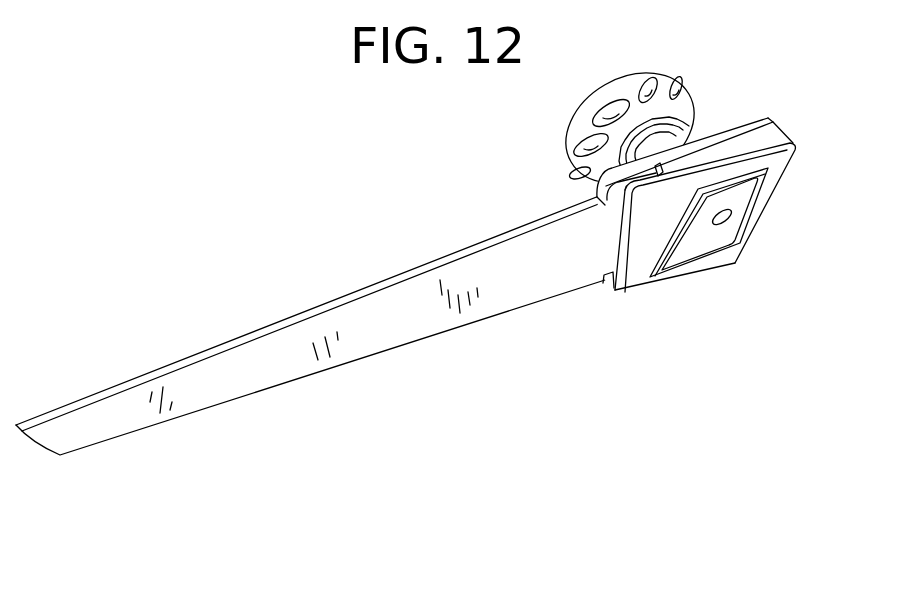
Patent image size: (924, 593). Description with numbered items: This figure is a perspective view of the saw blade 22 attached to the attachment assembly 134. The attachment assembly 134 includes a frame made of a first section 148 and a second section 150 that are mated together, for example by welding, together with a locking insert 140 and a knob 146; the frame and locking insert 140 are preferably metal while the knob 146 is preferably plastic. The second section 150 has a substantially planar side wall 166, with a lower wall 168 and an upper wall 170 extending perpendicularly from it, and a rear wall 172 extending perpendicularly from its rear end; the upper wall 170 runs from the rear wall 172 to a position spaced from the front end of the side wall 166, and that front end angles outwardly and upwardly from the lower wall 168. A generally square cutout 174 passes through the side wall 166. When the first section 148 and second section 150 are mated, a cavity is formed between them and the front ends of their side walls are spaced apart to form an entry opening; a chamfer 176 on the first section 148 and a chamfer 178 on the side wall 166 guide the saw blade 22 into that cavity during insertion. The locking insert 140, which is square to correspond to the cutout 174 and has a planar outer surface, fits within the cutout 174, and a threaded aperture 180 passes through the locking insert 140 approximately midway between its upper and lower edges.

The saw blade 22 is at (400, 331).
The knob 146 is at (596, 106).
The first section 148 is at (740, 127).
The second section 150 is at (796, 152).
The upper wall 170 is at (773, 128).
The chamfer 176 is at (580, 191).
The side wall 166 is at (637, 237).
The chamfer 178 is at (603, 247).
The lower wall 168 is at (677, 277).
The rear wall 172 is at (763, 202).
The locking insert 140 is at (699, 247).
The cutout 174 is at (740, 228).
The threaded aperture 180 is at (727, 213).
The attachment assembly 134 is at (731, 275).